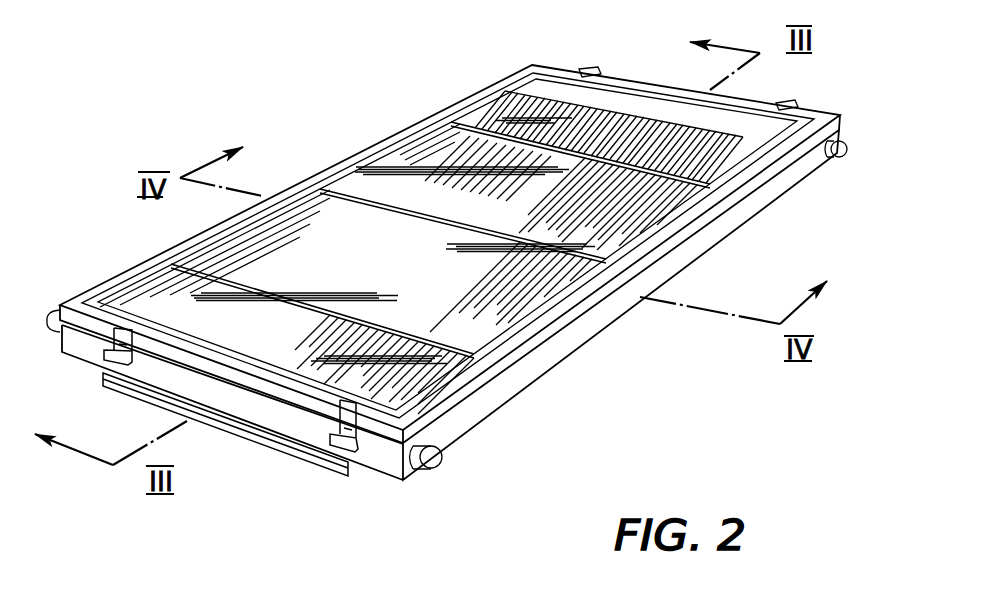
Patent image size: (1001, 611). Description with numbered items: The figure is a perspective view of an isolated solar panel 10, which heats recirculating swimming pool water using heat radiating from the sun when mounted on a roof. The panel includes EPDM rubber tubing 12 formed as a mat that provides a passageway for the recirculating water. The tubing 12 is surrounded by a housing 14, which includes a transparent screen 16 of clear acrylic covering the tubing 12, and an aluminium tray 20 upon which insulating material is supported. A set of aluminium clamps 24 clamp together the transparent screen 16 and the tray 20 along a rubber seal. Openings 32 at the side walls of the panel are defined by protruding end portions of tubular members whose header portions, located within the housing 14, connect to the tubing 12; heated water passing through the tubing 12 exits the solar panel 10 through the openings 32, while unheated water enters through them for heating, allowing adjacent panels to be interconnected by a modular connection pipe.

The solar panel 10 is at (352, 133).
The rubber tubing 12 is at (514, 113).
The housing 14 is at (579, 359).
The transparent screen 16 is at (527, 287).
The tray 20 is at (477, 408).
The clamps 24 is at (590, 68).
The openings 32 is at (845, 155).